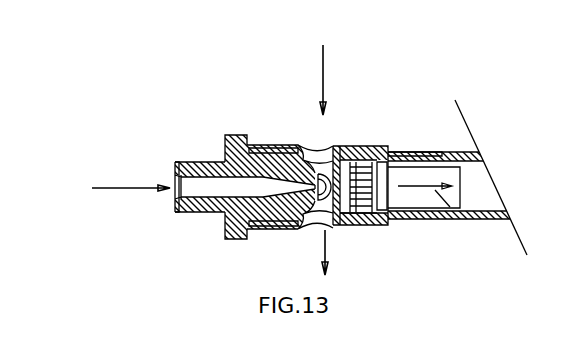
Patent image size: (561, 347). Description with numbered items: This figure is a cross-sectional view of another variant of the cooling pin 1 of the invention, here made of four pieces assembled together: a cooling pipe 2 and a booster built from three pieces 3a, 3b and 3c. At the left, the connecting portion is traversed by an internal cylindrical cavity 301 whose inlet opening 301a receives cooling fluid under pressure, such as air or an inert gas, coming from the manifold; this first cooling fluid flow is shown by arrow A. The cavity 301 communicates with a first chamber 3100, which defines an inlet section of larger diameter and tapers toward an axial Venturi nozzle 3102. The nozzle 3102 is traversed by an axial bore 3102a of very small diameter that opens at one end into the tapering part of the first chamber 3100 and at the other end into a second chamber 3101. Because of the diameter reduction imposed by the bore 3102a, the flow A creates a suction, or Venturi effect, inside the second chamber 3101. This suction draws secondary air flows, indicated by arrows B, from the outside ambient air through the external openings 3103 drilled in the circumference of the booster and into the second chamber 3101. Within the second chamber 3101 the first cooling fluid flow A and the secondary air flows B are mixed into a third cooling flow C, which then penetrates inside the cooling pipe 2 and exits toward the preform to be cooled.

The cooling pin 1 is at (410, 103).
The cooling pipe 2 is at (440, 218).
The booster piece 3a is at (229, 229).
The booster piece 3b is at (343, 227).
The booster piece 3c is at (417, 151).
The internal cylindrical cavity 301 is at (207, 186).
The opening 301a is at (175, 179).
The first chamber 3100 is at (257, 229).
The second chamber 3101 is at (357, 225).
The Venturi nozzle 3102 is at (298, 143).
The axial bore 3102a is at (337, 142).
The external opening 3103 is at (311, 221).
The first cooling fluid flow A is at (125, 187).
The secondary air flows B is at (330, 160).
The third cooling flow C is at (465, 218).